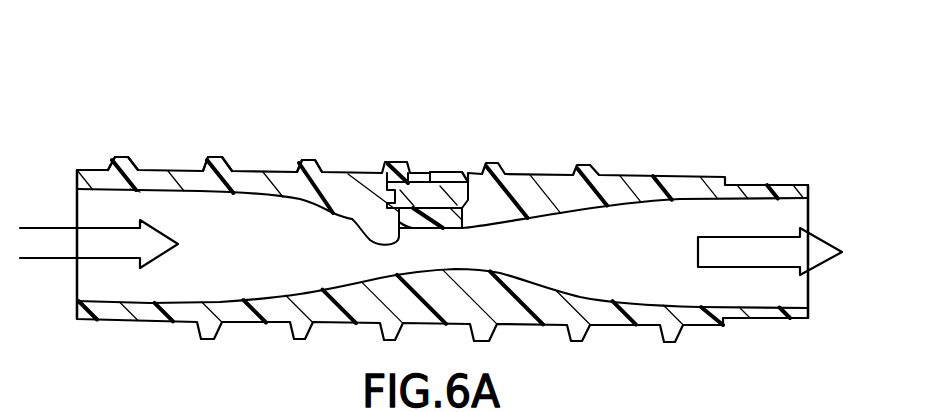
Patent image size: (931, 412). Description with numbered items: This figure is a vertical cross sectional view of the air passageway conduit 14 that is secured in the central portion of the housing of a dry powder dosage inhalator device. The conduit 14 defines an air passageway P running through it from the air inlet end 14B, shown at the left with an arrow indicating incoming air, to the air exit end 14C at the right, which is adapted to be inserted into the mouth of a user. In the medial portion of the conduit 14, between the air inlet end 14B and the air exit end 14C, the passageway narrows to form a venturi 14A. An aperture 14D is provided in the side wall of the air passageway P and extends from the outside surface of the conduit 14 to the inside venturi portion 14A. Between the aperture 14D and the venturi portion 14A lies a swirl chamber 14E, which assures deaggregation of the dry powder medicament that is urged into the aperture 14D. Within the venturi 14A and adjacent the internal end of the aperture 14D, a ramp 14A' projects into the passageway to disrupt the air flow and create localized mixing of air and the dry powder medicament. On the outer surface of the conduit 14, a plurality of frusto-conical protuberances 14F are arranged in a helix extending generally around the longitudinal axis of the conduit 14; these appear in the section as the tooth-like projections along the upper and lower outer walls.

The air passageway conduit 14 is at (431, 175).
The venturi 14A is at (442, 248).
The ramp 14A' is at (361, 242).
The air inlet end 14B is at (88, 190).
The air exit end 14C is at (808, 205).
The aperture 14D is at (443, 176).
The swirl chamber 14E is at (385, 178).
The frusto-conical protuberances 14F is at (217, 157).
The air passageway P is at (137, 190).